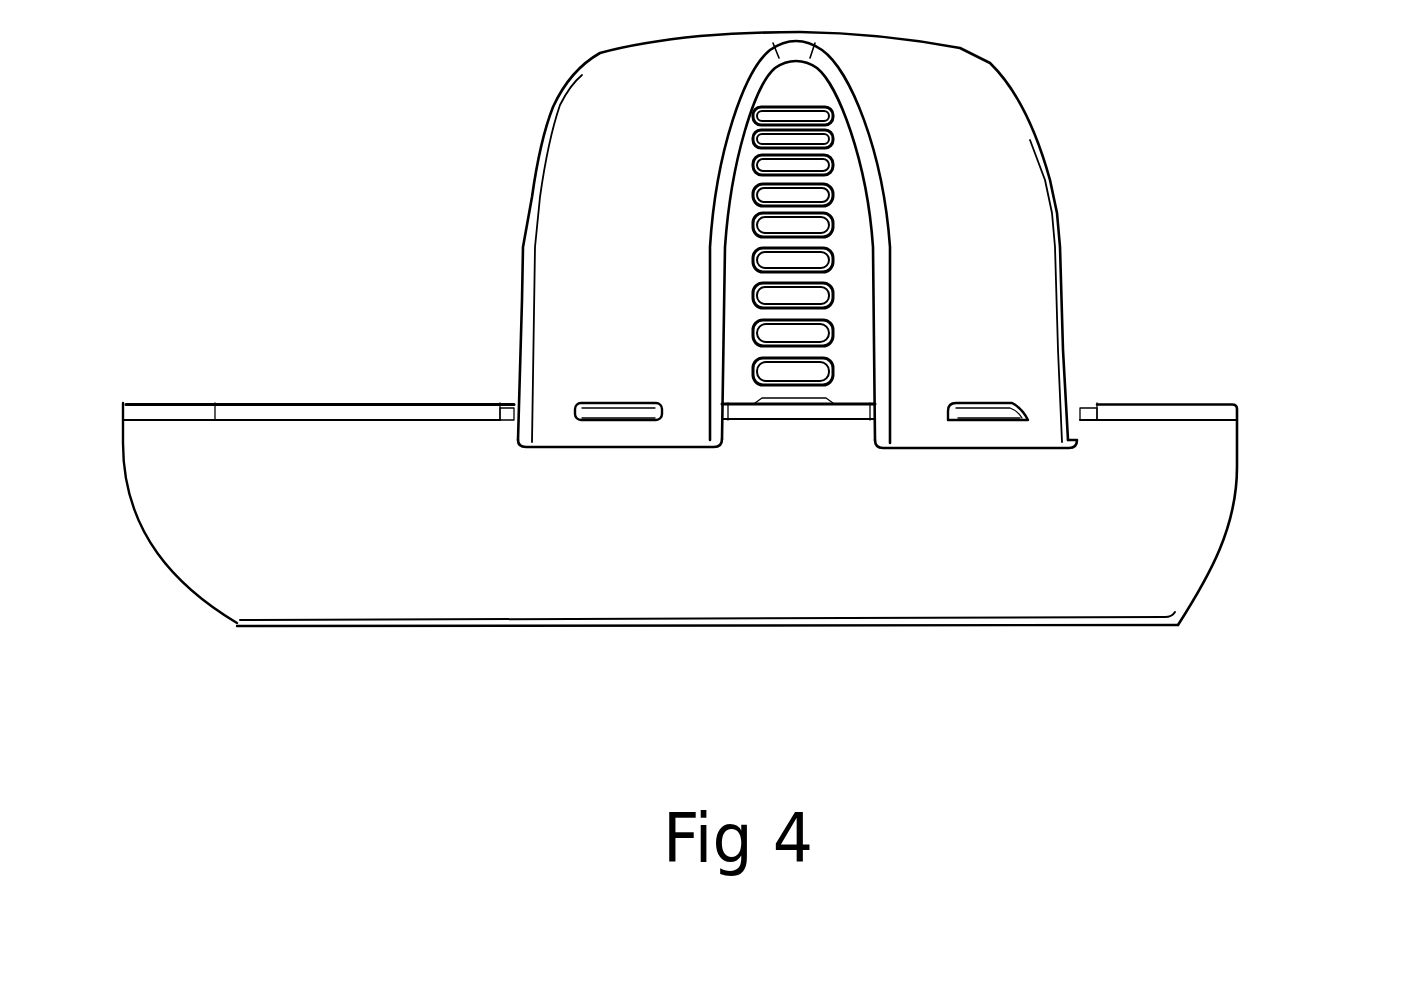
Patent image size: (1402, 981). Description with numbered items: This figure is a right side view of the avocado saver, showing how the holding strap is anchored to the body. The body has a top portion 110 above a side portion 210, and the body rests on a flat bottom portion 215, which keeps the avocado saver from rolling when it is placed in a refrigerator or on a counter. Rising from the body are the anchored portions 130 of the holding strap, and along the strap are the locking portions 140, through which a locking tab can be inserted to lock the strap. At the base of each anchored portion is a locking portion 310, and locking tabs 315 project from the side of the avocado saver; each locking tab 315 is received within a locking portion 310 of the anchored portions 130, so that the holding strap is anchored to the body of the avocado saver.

The top portion 110 is at (259, 398).
The anchored portions of the holding strap 130 is at (568, 262).
The locking portions of the holding strap 140 is at (812, 375).
The side portion 210 is at (1193, 491).
The flat bottom portion 215 is at (1060, 628).
The locking portion of the anchored portions 310 is at (575, 406).
The locking tabs 315 is at (620, 413).